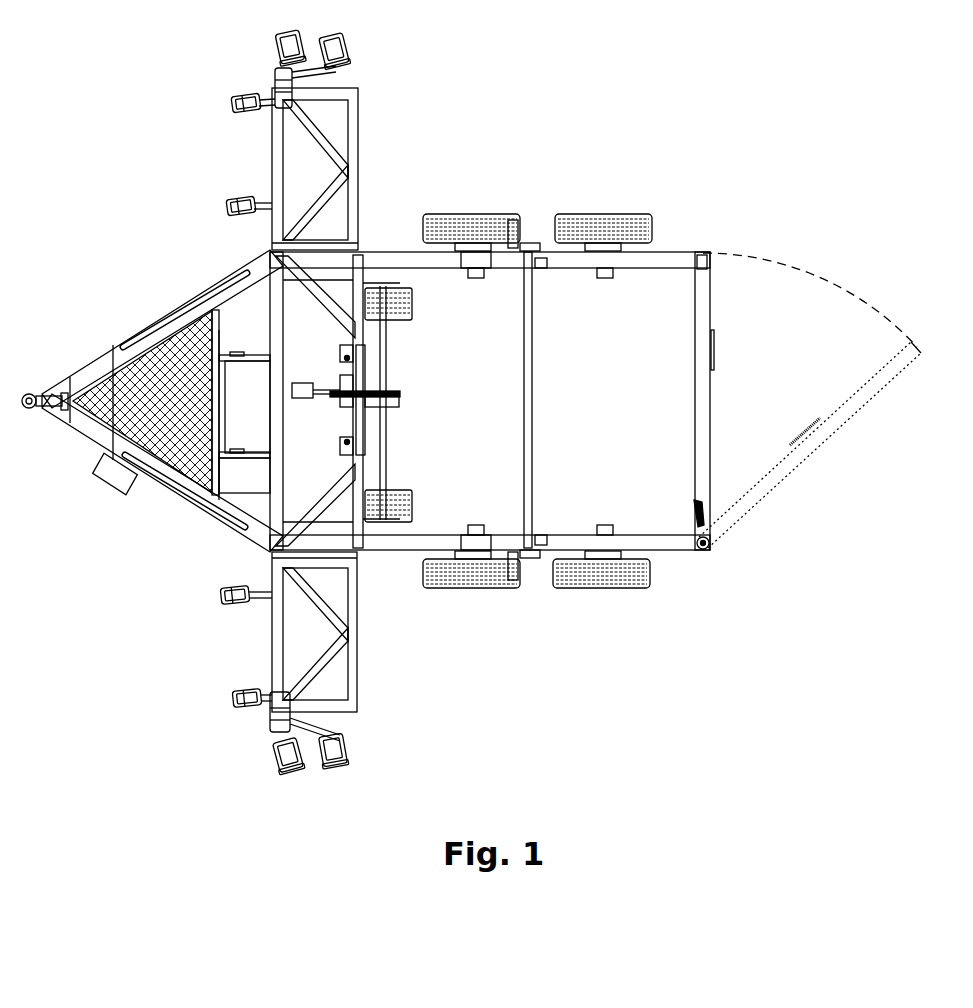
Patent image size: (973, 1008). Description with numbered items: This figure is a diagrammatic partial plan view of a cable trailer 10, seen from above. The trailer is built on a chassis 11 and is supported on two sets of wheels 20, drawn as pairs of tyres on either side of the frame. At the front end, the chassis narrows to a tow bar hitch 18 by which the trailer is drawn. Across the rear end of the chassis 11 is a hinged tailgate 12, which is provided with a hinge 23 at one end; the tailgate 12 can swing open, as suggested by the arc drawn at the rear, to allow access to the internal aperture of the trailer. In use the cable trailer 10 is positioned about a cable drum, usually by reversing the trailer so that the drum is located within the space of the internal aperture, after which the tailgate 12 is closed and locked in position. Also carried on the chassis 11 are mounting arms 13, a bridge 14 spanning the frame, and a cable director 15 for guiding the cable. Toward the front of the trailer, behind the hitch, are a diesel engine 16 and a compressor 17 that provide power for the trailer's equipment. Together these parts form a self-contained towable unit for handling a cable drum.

The cable trailer 10 is at (886, 573).
The chassis 11 is at (462, 540).
The hinged tailgate 12 is at (712, 488).
The mounting arms 13 is at (558, 262).
The bridge 14 is at (353, 521).
The cable director 15 is at (283, 367).
The diesel engine 16 is at (245, 478).
The compressor 17 is at (245, 405).
The tow bar hitch 18 is at (42, 410).
The wheels 20 is at (497, 560).
The hinge 23 is at (704, 550).